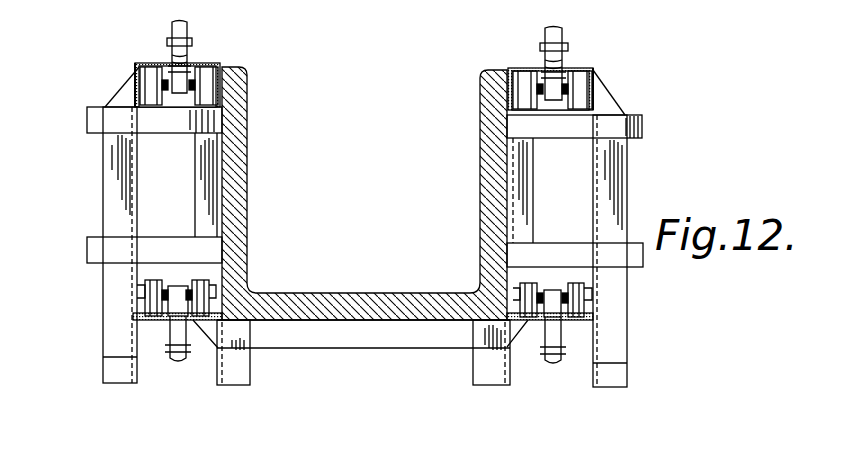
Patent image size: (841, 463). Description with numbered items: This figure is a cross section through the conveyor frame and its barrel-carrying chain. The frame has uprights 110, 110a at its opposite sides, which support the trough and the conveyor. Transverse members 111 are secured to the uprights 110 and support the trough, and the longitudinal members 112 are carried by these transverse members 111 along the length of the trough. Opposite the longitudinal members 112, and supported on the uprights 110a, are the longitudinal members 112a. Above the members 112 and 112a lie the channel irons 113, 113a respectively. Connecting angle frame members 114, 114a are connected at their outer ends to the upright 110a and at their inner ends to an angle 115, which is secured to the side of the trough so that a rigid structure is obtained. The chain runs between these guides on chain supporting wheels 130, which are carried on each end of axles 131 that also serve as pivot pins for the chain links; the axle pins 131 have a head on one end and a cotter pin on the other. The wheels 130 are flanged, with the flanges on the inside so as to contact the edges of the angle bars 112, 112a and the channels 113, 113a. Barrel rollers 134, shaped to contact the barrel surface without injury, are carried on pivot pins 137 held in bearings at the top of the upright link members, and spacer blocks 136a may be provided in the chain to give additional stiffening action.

The upright 110 is at (250, 356).
The upright 110a is at (645, 338).
The transverse member 111 is at (348, 340).
The longitudinal member 112 is at (215, 294).
The longitudinal member 112a is at (145, 318).
The channel iron 113 is at (208, 64).
The channel iron 113a is at (600, 55).
The connecting angle frame member 114 is at (151, 133).
The connecting angle frame member 114a is at (579, 234).
The angle 115 is at (203, 184).
The chain supporting wheel 130 is at (156, 80).
The axle 131 is at (217, 87).
The barrel roller 134 is at (183, 25).
The spacer block 136a is at (547, 80).
The pivot pin 137 is at (193, 38).